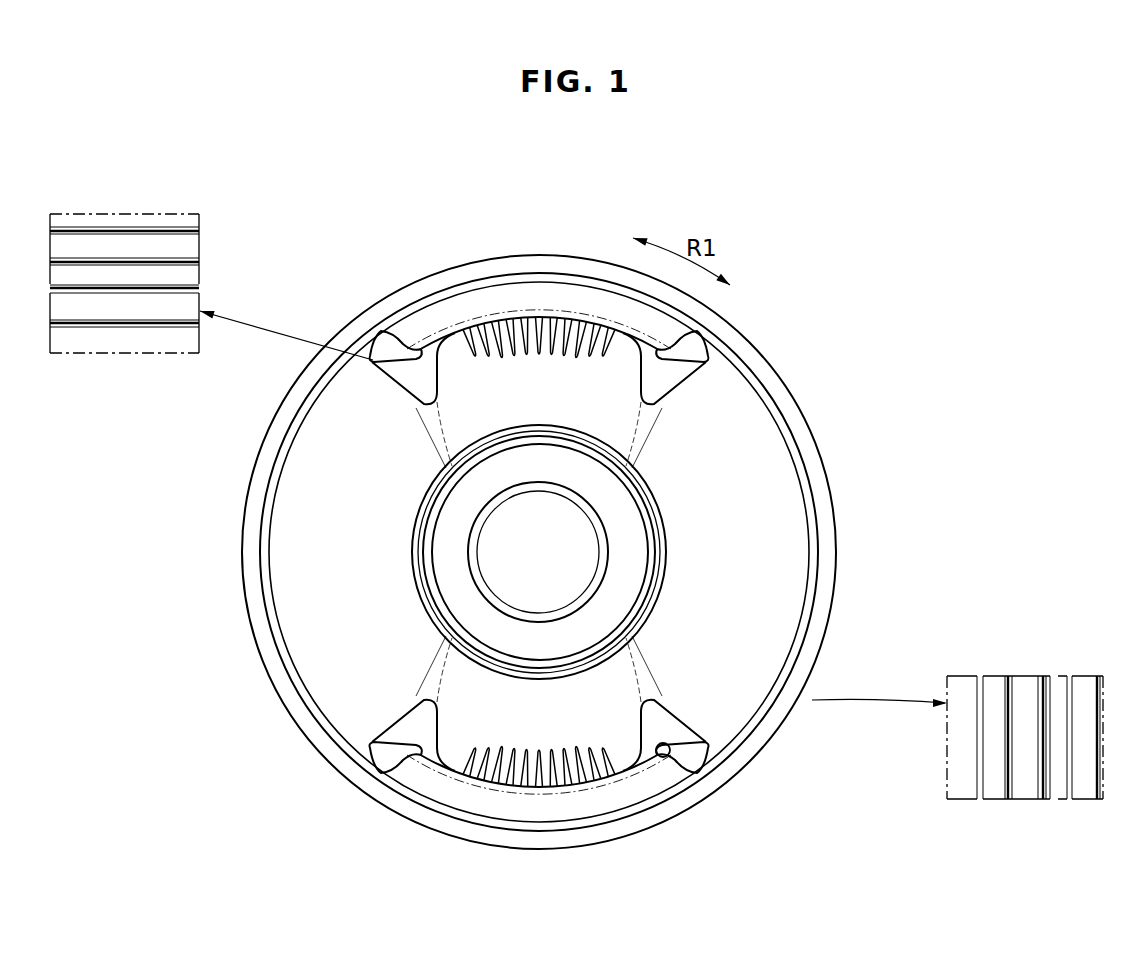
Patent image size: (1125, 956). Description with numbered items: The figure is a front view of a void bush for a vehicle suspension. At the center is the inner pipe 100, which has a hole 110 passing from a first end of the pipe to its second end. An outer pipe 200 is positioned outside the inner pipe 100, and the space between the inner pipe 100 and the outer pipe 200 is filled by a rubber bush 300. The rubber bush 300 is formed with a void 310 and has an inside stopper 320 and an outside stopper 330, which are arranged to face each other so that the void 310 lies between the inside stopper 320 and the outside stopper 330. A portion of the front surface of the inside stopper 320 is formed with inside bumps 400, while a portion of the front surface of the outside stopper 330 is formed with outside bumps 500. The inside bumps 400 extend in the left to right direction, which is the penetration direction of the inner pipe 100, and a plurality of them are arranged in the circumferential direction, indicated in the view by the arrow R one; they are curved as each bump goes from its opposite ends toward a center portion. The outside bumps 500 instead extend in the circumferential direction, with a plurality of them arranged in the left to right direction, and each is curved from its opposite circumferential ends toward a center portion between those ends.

The inner pipe 100 is at (458, 590).
The hole 110 is at (517, 552).
The outer pipe 200 is at (430, 288).
The rubber bush 300 is at (760, 538).
The void 310 is at (700, 374).
The inside stopper 320 is at (507, 395).
The outside stopper 330 is at (556, 300).
The inside bumps 400 is at (512, 320).
The outside bumps 500 is at (90, 310).